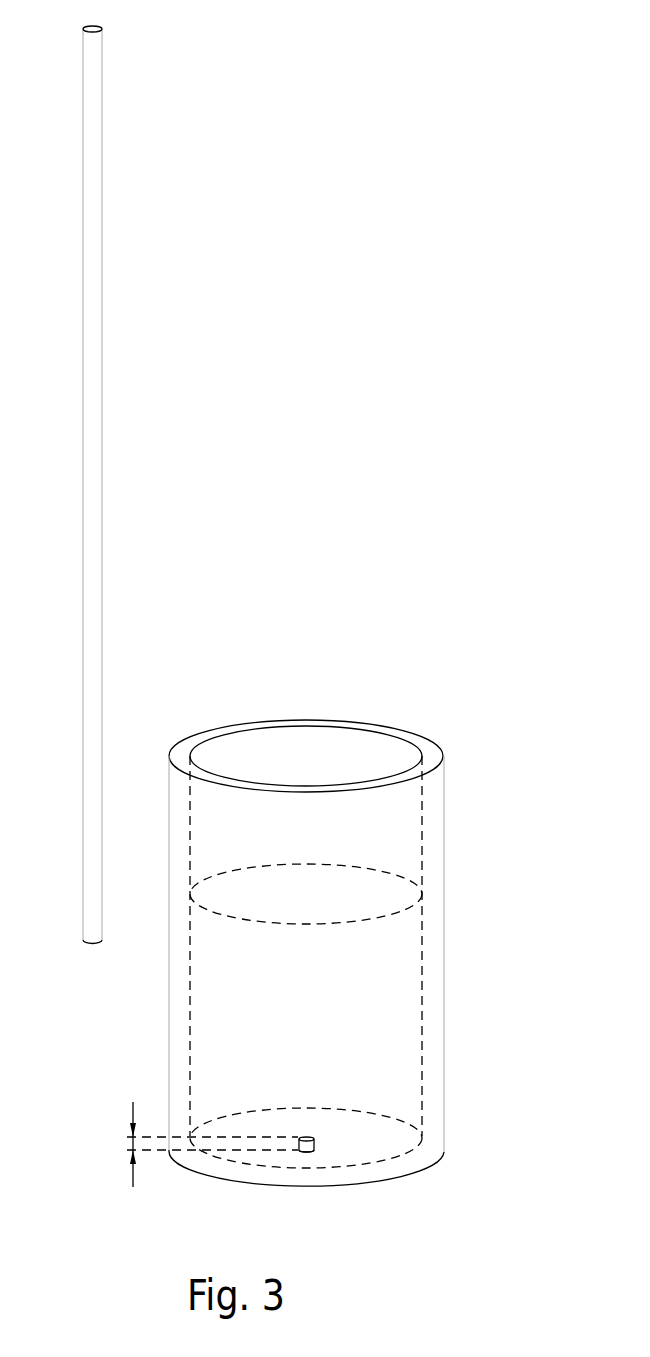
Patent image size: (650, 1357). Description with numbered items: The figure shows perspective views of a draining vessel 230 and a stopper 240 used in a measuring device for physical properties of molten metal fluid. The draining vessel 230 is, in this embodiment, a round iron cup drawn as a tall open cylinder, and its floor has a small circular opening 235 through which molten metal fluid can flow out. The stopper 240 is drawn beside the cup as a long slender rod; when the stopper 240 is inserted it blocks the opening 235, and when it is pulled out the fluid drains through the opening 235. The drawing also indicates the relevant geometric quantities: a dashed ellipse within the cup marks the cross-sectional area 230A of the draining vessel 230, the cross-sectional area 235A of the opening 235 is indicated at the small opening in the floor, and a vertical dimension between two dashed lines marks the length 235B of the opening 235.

The stopper 240 is at (100, 567).
The draining vessel 230 is at (432, 1006).
The cross-sectional area 230A is at (379, 896).
The opening 235 is at (309, 1132).
The cross-sectional area 235A is at (310, 1152).
The length 235B is at (128, 1144).